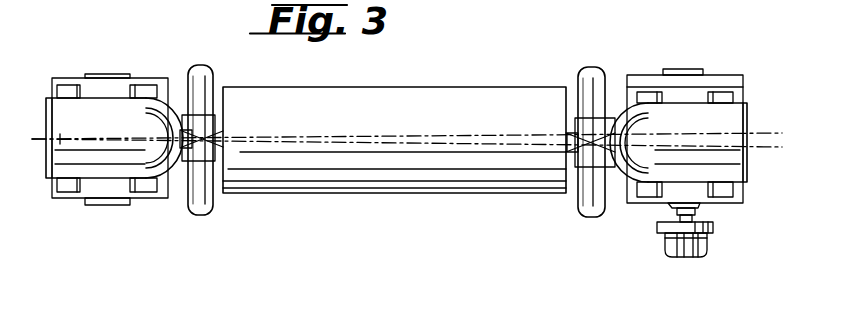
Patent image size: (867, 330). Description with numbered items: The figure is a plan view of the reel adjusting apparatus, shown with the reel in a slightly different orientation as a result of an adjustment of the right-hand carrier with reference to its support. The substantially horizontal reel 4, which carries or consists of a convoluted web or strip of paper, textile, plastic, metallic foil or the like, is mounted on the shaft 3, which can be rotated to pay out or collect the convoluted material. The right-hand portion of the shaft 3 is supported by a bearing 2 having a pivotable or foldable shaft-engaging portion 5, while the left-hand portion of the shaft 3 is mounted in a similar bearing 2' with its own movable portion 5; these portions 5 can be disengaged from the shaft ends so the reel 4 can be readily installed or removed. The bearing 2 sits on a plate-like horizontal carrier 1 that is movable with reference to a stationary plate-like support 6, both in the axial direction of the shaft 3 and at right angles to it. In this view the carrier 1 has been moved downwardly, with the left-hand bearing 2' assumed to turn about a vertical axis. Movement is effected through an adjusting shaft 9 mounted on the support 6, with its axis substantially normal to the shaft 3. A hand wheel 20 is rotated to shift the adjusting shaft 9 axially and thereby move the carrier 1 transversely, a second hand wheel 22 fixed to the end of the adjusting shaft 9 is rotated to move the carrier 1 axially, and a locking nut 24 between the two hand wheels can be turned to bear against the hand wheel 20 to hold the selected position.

The carrier 1 is at (685, 110).
The bearing 2 is at (678, 103).
The bearing 2' is at (114, 108).
The shaft 3 is at (576, 118).
The reel 4 is at (467, 97).
The shaft-engaging portion 5 is at (181, 122).
The support 6 is at (648, 78).
The adjusting shaft 9 is at (689, 218).
The hand wheel 20 is at (660, 228).
The second hand wheel 22 is at (693, 247).
The locking nut 24 is at (676, 256).